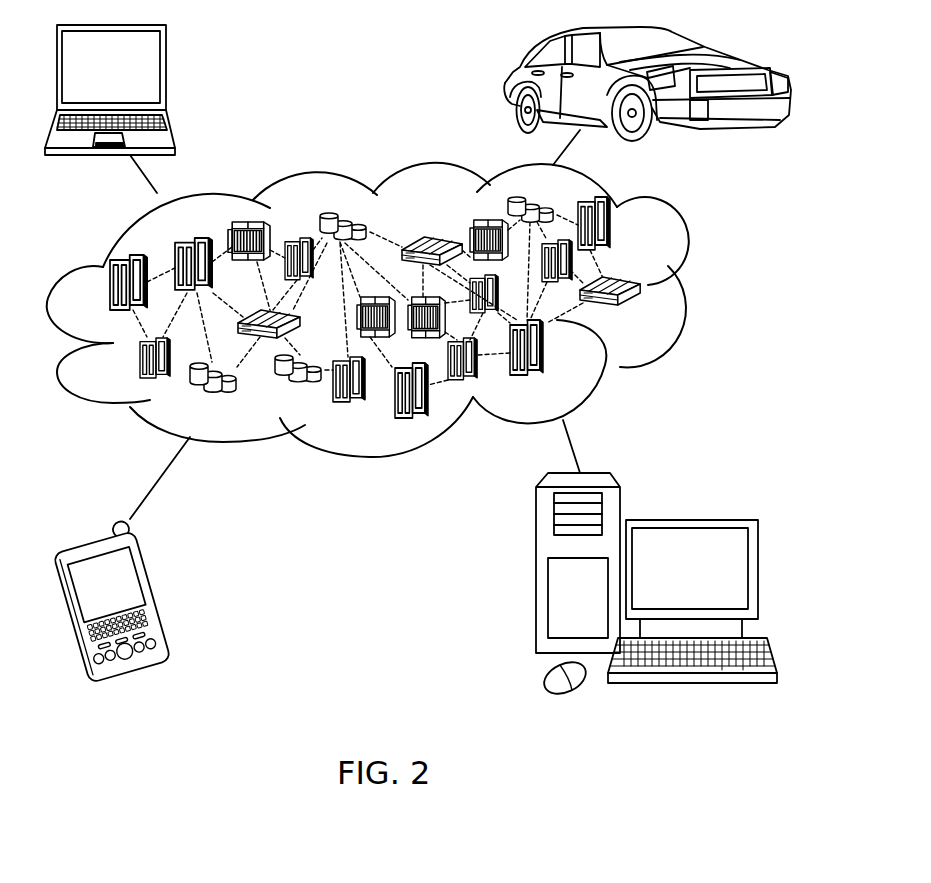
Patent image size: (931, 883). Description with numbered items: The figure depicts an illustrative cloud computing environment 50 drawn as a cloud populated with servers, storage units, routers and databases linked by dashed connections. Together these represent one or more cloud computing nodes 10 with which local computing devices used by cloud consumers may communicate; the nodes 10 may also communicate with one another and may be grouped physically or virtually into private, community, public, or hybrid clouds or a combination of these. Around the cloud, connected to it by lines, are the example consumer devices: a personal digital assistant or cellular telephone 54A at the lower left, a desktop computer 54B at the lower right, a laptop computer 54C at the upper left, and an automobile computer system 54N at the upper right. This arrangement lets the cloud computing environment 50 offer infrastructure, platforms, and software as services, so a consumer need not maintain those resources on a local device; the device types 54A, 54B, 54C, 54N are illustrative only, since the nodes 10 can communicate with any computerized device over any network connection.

The cloud computing node 10 is at (664, 328).
The cloud computing environment 50 is at (687, 290).
The personal digital assistant (PDA) or cellular telephone 54A is at (160, 597).
The desktop computer 54B is at (708, 520).
The laptop computer 54C is at (165, 65).
The automobile computer system 54N is at (512, 83).